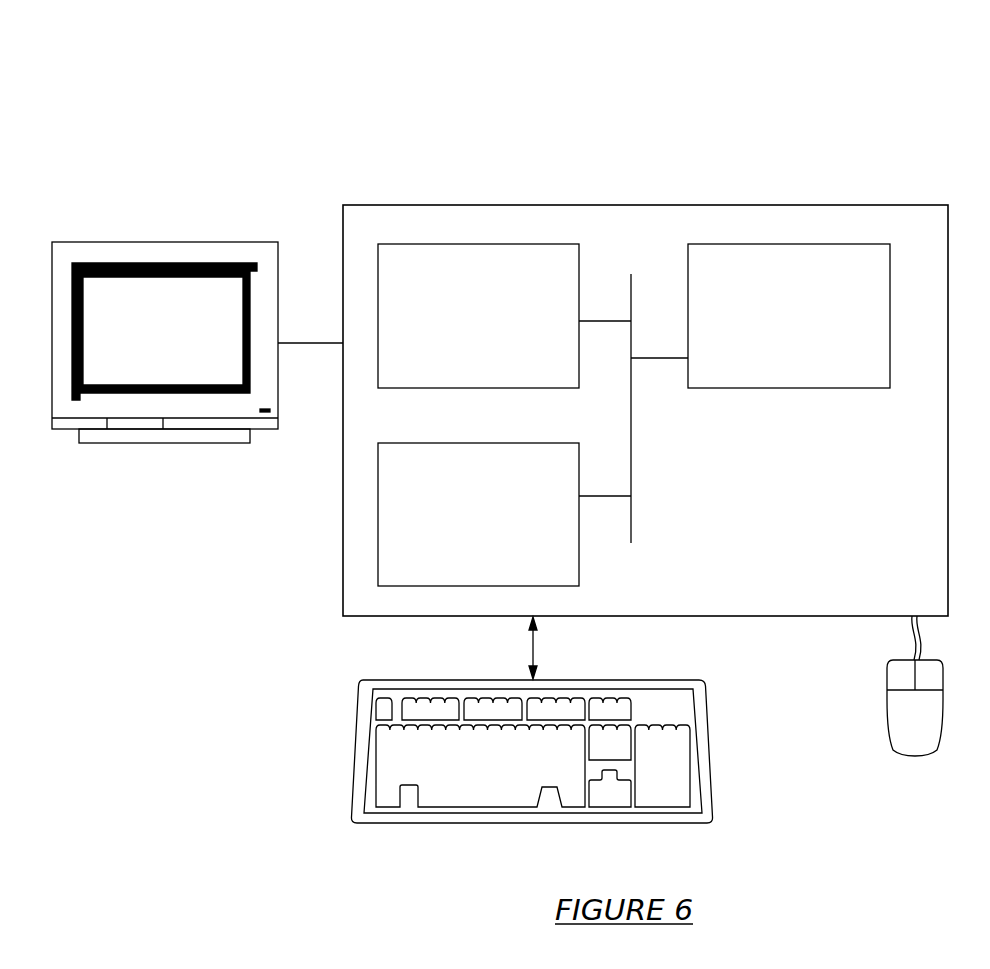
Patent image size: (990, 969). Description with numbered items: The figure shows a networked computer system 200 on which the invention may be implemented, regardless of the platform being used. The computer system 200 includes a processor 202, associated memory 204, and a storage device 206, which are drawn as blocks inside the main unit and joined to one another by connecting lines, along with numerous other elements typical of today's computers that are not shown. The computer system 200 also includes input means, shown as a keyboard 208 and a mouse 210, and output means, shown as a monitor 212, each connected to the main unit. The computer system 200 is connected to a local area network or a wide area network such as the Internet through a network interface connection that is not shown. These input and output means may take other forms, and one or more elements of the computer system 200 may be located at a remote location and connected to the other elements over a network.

The networked computer system 200 is at (840, 91).
The processor 202 is at (784, 327).
The memory 204 is at (459, 327).
The storage device 206 is at (456, 529).
The keyboard 208 is at (449, 789).
The mouse 210 is at (894, 729).
The monitor 212 is at (142, 349).